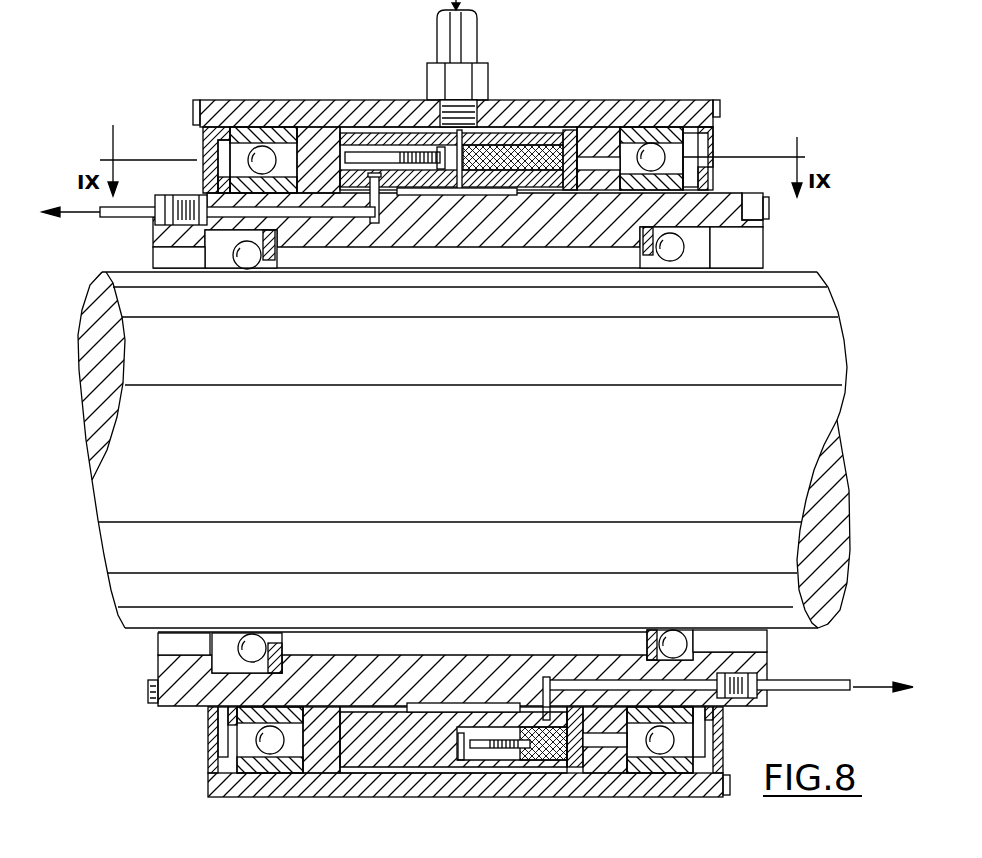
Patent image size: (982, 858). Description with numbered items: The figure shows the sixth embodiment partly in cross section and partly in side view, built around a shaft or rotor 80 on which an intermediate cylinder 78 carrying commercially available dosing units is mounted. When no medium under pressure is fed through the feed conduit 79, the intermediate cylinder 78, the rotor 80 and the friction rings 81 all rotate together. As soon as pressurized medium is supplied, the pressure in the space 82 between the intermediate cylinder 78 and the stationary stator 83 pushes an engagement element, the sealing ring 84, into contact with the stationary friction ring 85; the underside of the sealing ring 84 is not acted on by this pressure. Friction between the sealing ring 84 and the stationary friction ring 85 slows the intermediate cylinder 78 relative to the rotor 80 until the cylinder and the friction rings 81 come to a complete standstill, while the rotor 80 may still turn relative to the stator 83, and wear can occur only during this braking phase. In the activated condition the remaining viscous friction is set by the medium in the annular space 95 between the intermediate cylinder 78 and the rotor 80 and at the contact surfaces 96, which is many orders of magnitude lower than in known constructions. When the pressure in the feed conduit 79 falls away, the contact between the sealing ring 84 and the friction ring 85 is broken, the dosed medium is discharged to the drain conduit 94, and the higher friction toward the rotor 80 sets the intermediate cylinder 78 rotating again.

The intermediate cylinder 78 is at (420, 748).
The feed conduit 79 is at (457, 37).
The rotor 80 is at (800, 255).
The friction rings 81 is at (318, 172).
The space 82 is at (396, 127).
The stator 83 is at (532, 110).
The sealing ring 84 is at (577, 127).
The stationary friction ring 85 is at (320, 148).
The drain conduit 94 is at (135, 217).
The annular space 95 is at (470, 195).
The contact surfaces 96 is at (392, 704).